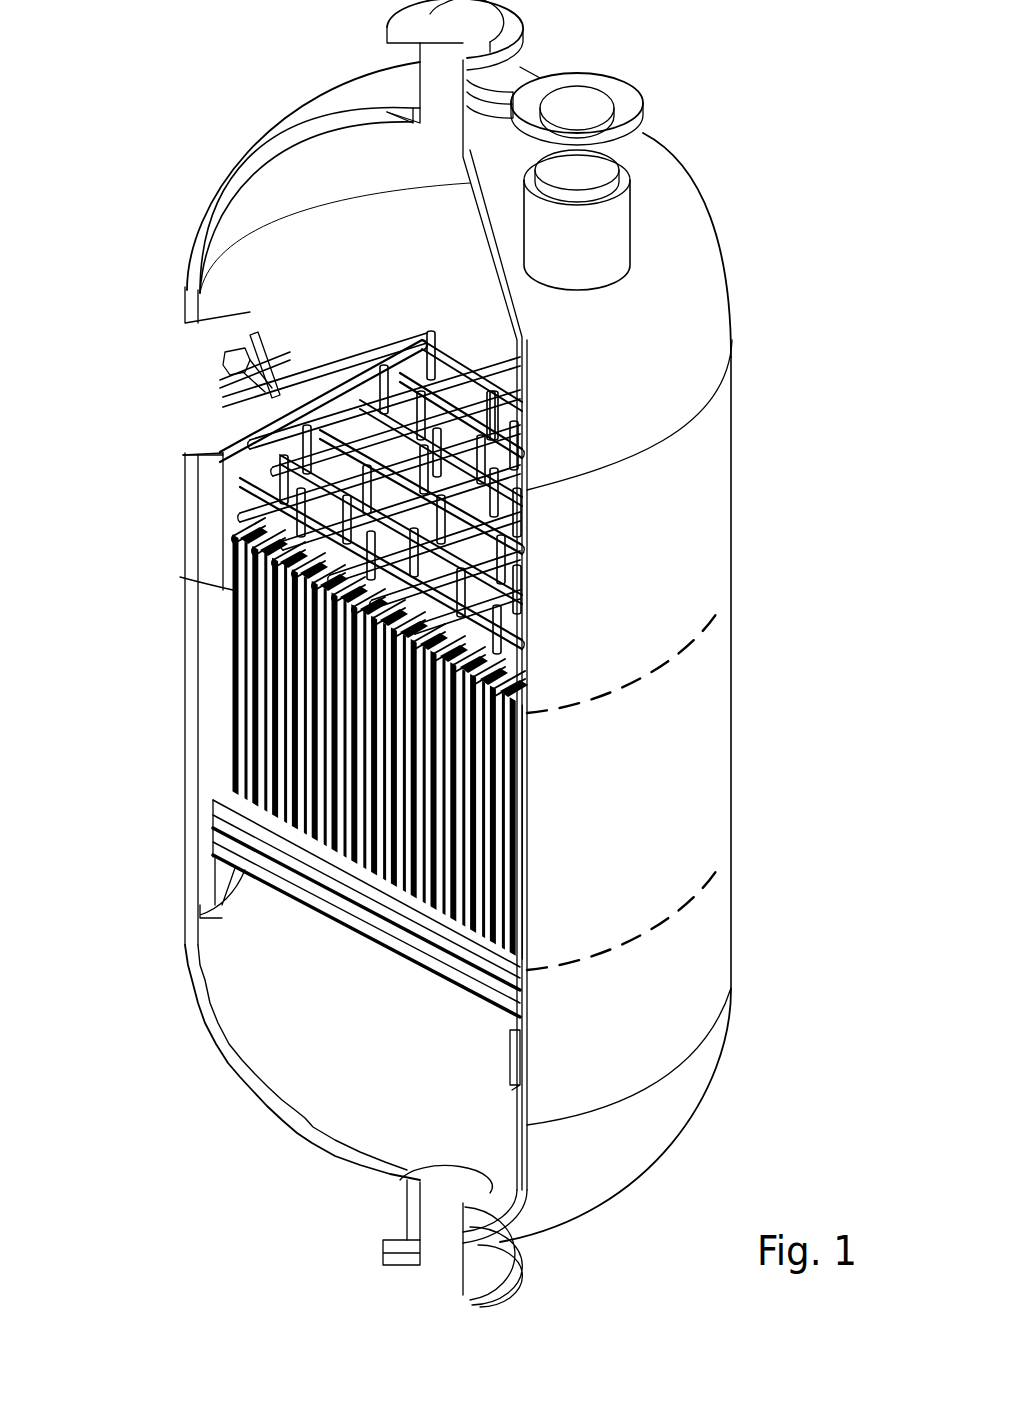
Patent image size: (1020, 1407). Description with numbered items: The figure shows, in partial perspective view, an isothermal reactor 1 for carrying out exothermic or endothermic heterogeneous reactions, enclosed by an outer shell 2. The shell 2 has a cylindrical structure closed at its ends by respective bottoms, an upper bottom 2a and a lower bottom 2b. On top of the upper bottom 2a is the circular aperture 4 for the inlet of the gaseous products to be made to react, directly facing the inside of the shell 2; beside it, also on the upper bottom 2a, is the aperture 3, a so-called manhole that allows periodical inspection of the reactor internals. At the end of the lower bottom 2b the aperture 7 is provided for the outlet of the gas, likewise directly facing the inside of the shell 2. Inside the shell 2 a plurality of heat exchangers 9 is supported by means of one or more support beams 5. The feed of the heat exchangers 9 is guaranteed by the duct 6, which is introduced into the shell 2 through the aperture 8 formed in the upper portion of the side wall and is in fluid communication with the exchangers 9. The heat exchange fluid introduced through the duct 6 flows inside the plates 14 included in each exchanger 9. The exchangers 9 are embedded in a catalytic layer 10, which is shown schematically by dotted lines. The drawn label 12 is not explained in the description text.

The isothermal reactor 1 is at (220, 130).
The outer shell 2 is at (658, 527).
The upper bottom 2a is at (690, 255).
The lower bottom 2b is at (650, 1124).
The aperture 3 is at (574, 108).
The aperture 4 is at (450, 33).
The support beam 5 is at (400, 940).
The duct 6 is at (300, 410).
The aperture 7 is at (445, 1245).
The aperture 8 is at (270, 385).
The heat exchanger 9 is at (232, 668).
The catalytic layer 10 is at (630, 815).
The header pipes 12 is at (527, 452).
The plate 14 is at (233, 598).